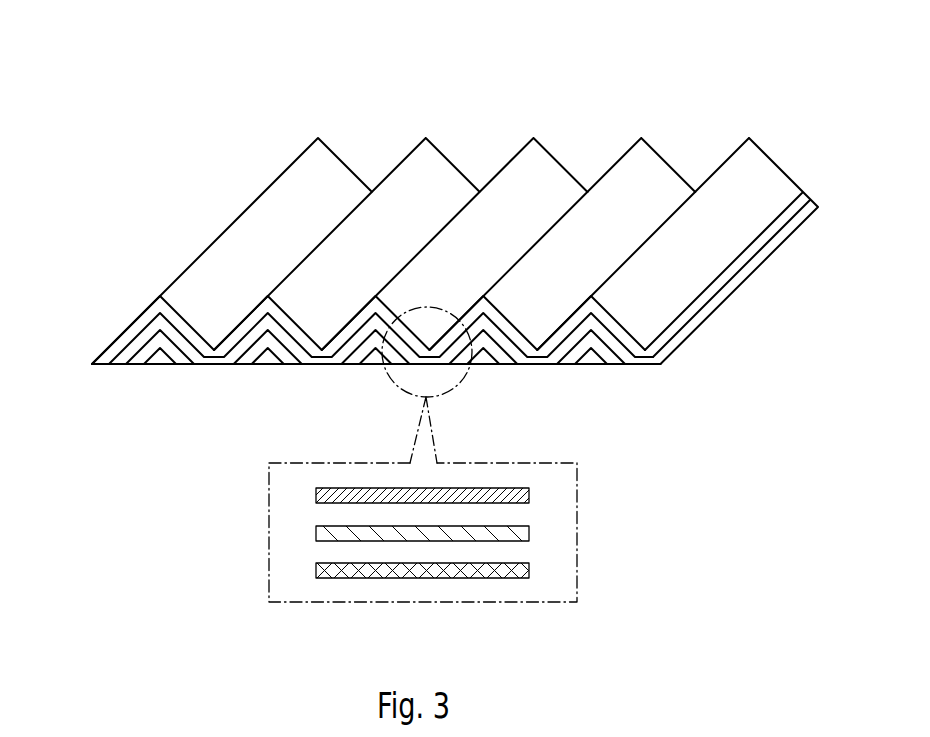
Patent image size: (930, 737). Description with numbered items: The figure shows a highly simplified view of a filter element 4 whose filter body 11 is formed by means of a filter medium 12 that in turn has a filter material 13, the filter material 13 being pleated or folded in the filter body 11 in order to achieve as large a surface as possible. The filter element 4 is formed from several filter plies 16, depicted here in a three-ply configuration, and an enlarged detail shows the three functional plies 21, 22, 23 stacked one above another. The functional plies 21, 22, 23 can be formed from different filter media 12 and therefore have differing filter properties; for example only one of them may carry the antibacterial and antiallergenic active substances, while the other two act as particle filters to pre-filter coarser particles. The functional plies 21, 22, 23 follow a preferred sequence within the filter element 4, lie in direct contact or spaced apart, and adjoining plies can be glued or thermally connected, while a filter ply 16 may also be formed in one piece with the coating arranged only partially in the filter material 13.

The filter element 4 is at (549, 91).
The filter body 11 is at (758, 175).
The filter medium 12 is at (651, 175).
The filter material 13 is at (138, 358).
The filter ply 16 is at (529, 495).
The first functional ply 21 is at (316, 495).
The second functional ply 22 is at (316, 533).
The third functional ply 23 is at (316, 570).